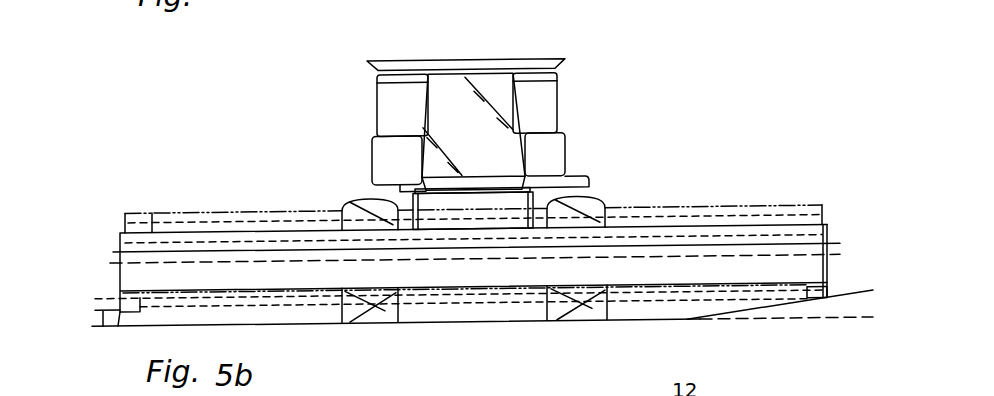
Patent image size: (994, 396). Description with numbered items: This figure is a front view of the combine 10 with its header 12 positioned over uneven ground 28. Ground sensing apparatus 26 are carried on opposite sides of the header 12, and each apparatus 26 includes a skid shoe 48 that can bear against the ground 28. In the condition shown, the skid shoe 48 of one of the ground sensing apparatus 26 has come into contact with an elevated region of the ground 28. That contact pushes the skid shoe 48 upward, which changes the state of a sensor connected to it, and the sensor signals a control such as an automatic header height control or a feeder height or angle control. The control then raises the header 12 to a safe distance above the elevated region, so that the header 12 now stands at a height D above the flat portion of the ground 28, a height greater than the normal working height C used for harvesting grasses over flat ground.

The combine 10 is at (612, 59).
The header 12 is at (150, 220).
The ground sensing apparatus 26 is at (119, 317).
The ground 28 is at (868, 290).
The skid shoe 48 is at (808, 297).
The height D is at (97, 302).
The height C is at (102, 311).